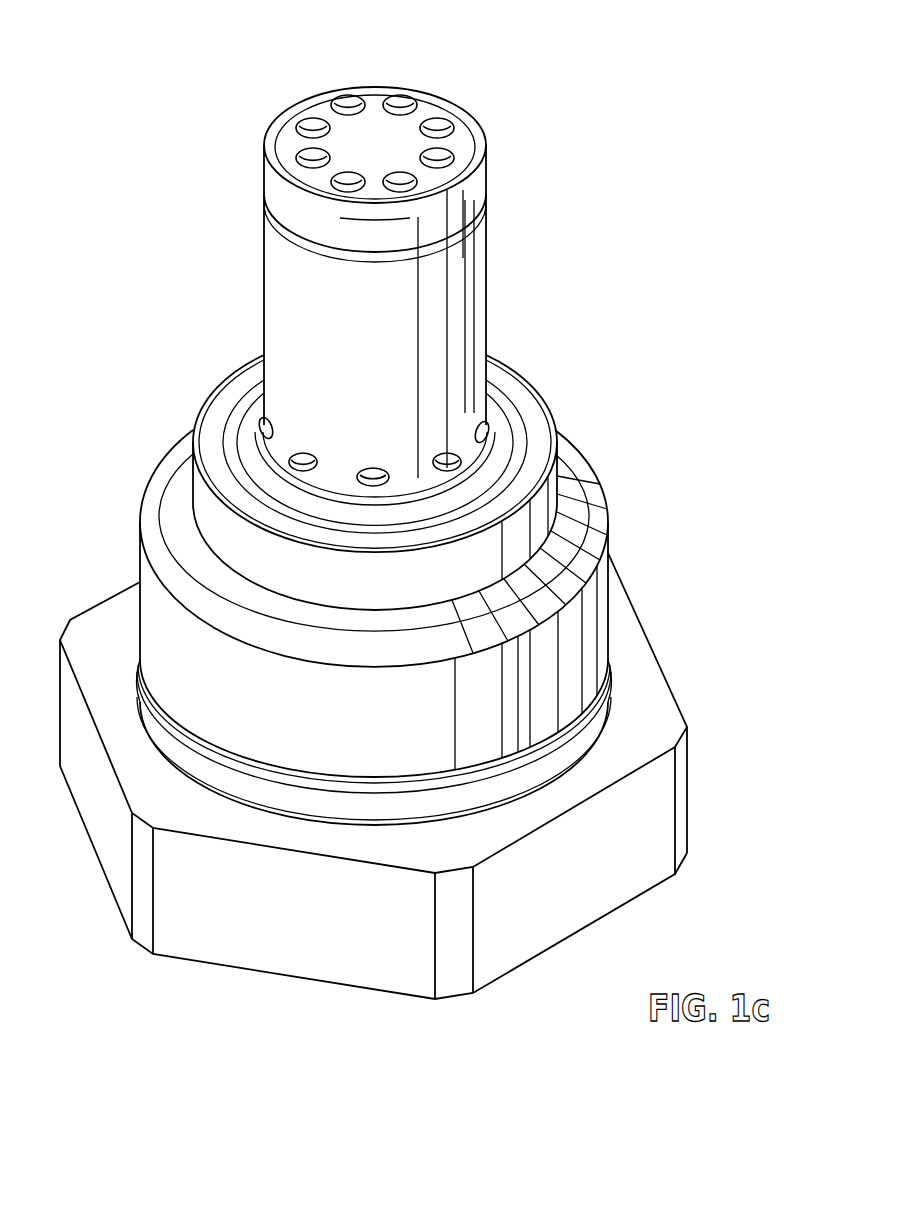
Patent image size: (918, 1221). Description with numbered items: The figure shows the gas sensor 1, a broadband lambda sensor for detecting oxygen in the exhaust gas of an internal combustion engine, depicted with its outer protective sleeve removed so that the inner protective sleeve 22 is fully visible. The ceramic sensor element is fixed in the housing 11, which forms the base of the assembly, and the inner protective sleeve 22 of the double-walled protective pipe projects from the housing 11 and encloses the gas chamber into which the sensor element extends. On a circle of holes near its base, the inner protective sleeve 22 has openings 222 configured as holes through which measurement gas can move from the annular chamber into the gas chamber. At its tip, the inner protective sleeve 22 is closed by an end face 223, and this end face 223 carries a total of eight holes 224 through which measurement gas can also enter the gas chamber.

The gas sensor 1 is at (558, 112).
The housing 11 is at (103, 623).
The inner protective sleeve 22 is at (280, 293).
The openings 222 is at (484, 433).
The end face 223 is at (345, 147).
The holes 224 is at (407, 103).